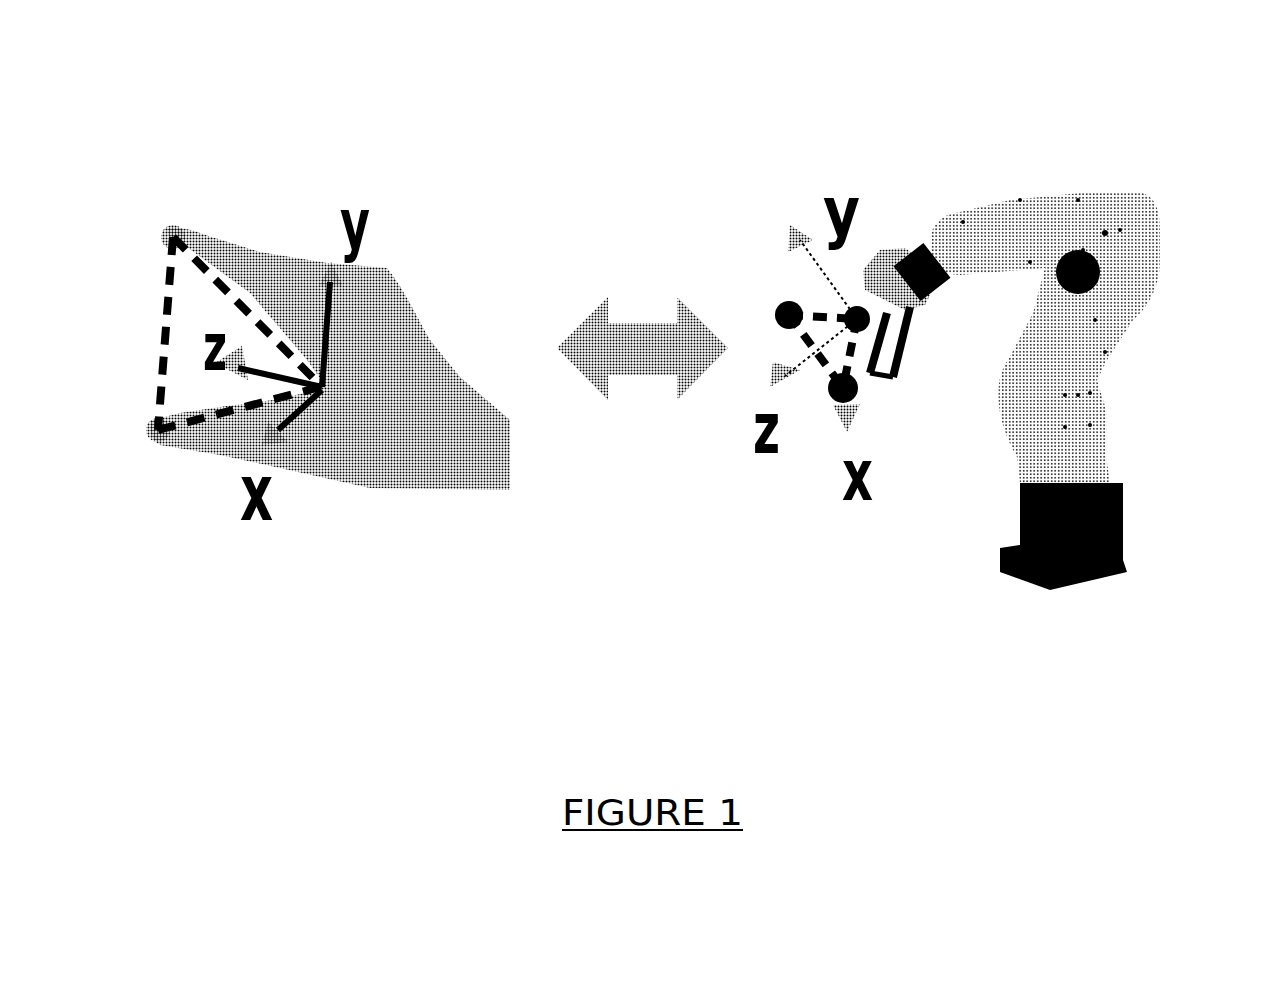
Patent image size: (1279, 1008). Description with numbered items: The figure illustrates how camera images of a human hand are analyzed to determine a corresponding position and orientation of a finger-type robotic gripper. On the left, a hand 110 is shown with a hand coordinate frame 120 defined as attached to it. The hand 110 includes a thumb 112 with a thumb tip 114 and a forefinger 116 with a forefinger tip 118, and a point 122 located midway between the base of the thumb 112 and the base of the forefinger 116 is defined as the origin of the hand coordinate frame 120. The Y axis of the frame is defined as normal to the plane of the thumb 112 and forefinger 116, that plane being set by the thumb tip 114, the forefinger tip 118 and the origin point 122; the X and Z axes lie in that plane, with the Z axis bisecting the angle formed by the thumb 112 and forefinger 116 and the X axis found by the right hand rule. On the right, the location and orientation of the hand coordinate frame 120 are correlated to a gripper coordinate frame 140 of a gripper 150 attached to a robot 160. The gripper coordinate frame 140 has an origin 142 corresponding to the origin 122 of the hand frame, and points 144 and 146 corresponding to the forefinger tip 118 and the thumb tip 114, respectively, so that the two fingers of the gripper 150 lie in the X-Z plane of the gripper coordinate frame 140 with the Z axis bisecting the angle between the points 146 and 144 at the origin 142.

The hand 110 is at (420, 327).
The thumb 112 is at (220, 453).
The thumb tip 114 is at (147, 430).
The forefinger 116 is at (270, 263).
The forefinger tip 118 is at (163, 237).
The hand coordinate frame 120 is at (320, 428).
The origin point 122 is at (330, 390).
The gripper coordinate frame 140 is at (890, 258).
The origin 142 is at (830, 302).
The point 144 is at (775, 313).
The point 146 is at (830, 402).
The gripper 150 is at (908, 395).
The robot 160 is at (1140, 398).